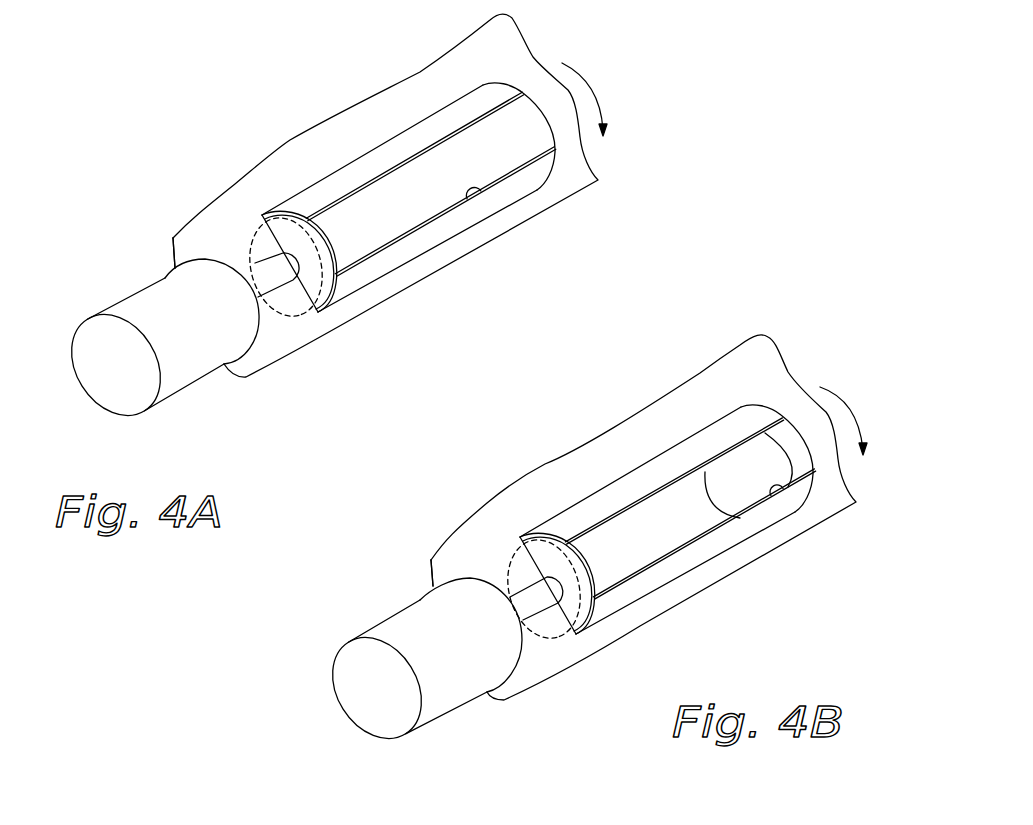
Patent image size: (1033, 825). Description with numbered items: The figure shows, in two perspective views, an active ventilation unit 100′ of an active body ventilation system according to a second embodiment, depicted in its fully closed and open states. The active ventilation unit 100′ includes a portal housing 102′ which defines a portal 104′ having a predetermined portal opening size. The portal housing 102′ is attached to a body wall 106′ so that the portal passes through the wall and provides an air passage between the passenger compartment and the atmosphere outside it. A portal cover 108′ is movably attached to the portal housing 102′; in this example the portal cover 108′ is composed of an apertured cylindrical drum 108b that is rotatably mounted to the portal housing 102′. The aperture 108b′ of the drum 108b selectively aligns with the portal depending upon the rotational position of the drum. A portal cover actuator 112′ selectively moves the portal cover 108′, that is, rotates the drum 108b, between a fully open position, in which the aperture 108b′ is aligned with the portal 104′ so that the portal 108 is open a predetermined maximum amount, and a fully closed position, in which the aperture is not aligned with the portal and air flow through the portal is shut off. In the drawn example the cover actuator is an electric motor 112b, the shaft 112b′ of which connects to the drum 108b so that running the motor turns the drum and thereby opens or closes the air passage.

In FIG. 4A, the active ventilation unit 100′ is at (610, 88).
In FIG. 4B, the active ventilation unit 100′ is at (722, 347).
In FIG. 4A, the portal housing 102′ is at (428, 243).
In FIG. 4B, the portal housing 102′ is at (633, 485).
In FIG. 4A, the portal 104′ is at (480, 190).
In FIG. 4B, the portal 104′ is at (784, 495).
In FIG. 4A, the body wall 106′ is at (498, 43).
In FIG. 4B, the body wall 106′ is at (782, 387).
In FIG. 4A, the portal 108 is at (552, 140).
In FIG. 4B, the portal cover 108′ is at (836, 486).
In FIG. 4A, the apertured cylindrical drum 108b is at (362, 245).
In FIG. 4B, the apertured cylindrical drum 108b is at (577, 613).
In FIG. 4A, the aperture 108b′ is at (305, 318).
In FIG. 4B, the aperture 108b′ is at (642, 550).
In FIG. 4A, the portal cover actuator 112′ is at (127, 297).
In FIG. 4B, the portal cover actuator 112′ is at (377, 627).
In FIG. 4A, the electric motor 112b is at (177, 377).
In FIG. 4B, the electric motor 112b is at (413, 610).
In FIG. 4A, the shaft 112b′ is at (247, 253).
In FIG. 4B, the shaft 112b′ is at (507, 575).